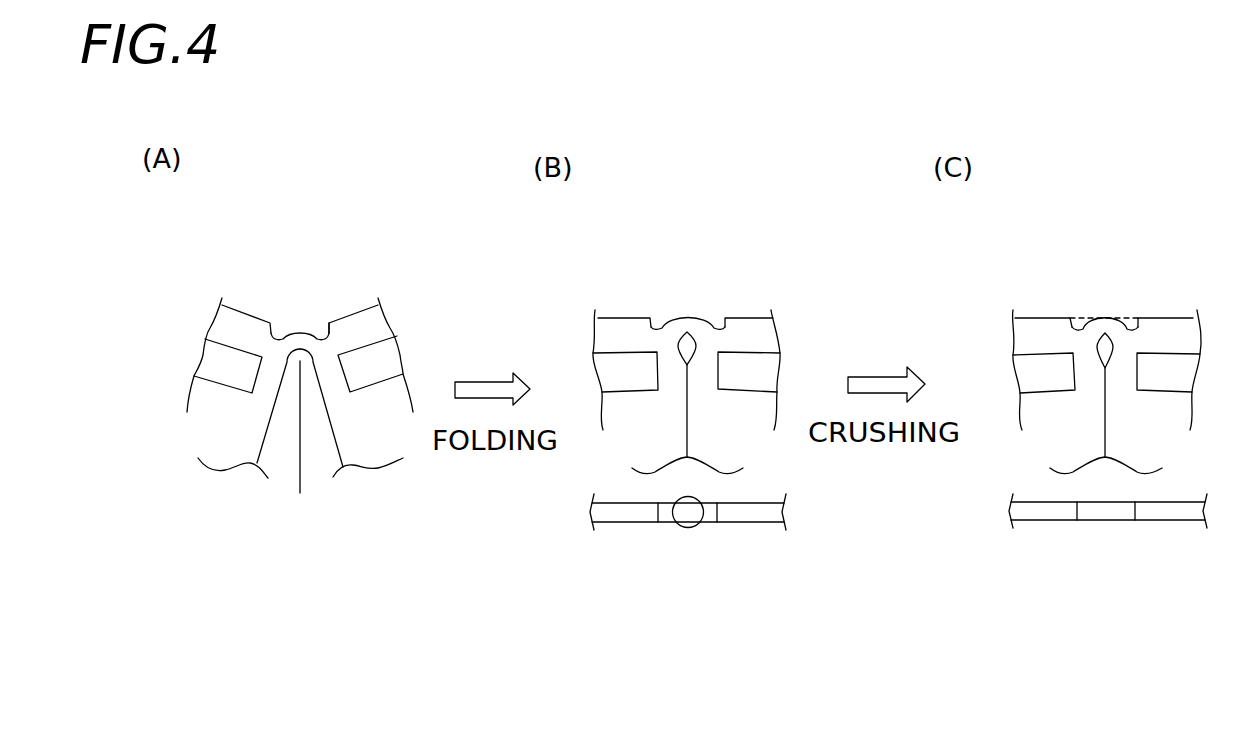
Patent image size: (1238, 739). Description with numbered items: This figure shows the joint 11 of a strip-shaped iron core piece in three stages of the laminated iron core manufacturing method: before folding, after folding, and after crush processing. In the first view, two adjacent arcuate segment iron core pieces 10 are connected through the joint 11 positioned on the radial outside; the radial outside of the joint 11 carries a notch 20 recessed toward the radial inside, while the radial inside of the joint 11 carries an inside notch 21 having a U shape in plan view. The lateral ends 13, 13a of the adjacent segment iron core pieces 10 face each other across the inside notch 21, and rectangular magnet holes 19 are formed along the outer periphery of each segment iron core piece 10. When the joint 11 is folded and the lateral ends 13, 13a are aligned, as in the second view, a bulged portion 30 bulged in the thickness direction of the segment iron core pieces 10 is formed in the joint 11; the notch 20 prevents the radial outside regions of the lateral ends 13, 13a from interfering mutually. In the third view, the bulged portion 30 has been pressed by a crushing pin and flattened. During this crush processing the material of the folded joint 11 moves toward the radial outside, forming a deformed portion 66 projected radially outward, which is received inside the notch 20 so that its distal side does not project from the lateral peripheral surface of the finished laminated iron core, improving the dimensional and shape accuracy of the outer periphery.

The segment iron core piece 10 is at (238, 328).
The joint 11 is at (301, 336).
The lateral end 13 is at (272, 433).
The lateral end 13a is at (333, 445).
The magnet hole 19 is at (230, 372).
The notch 20 is at (313, 330).
The inside notch 21 is at (300, 493).
The bulged portion 30 is at (688, 328).
The deformed portion 66 is at (1105, 317).